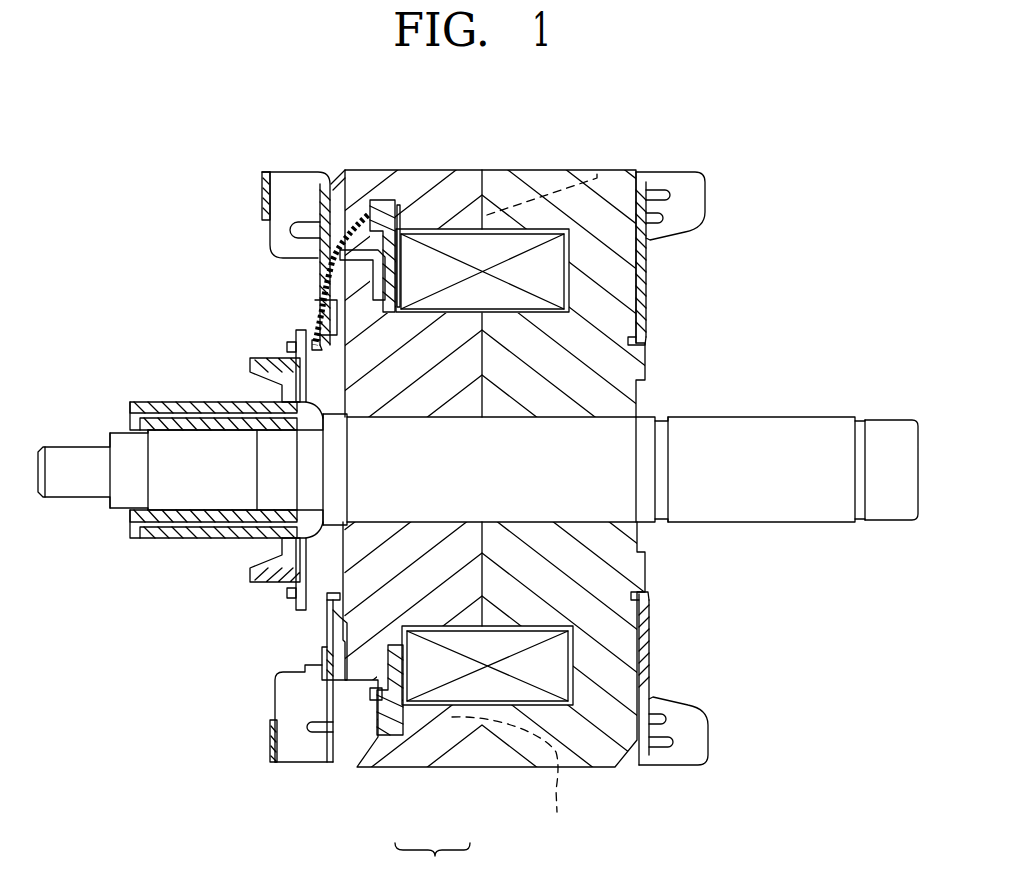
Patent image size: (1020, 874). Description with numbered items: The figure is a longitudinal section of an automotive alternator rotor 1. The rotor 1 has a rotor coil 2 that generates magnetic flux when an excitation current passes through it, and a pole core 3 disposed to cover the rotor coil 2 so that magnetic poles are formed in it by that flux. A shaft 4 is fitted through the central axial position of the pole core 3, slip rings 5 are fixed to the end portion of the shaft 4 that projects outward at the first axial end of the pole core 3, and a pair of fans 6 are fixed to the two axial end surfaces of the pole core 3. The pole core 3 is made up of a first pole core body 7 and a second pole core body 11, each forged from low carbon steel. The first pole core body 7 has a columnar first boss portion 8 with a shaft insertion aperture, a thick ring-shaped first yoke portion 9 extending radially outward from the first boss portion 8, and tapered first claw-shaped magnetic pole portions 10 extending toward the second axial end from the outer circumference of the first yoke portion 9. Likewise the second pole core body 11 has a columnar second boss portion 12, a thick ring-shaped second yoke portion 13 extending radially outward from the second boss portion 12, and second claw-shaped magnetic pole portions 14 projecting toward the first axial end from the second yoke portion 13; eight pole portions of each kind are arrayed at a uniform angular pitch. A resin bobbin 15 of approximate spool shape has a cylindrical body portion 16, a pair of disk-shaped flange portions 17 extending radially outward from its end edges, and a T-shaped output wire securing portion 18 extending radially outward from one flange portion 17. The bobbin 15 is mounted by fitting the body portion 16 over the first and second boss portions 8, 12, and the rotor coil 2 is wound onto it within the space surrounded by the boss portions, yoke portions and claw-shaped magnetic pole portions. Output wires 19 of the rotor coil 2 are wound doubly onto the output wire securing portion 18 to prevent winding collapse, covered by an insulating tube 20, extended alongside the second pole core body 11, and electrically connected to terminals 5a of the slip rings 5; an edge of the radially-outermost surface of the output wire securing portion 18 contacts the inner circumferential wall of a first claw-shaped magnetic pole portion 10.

The rotor 1 is at (188, 125).
The rotor coil 2 is at (483, 247).
The pole core 3 is at (432, 858).
The shaft 4 is at (788, 427).
The slip rings 5 is at (211, 398).
The terminals 5a is at (300, 336).
The fans 6 is at (287, 203).
The first pole core body 7 is at (498, 738).
The first boss portion 8 is at (583, 372).
The first yoke portion 9 is at (608, 278).
The first claw-shaped magnetic pole portions 10 is at (555, 180).
The second pole core body 11 is at (367, 725).
The second boss portion 12 is at (372, 582).
The second yoke portion 13 is at (350, 650).
The second claw-shaped magnetic pole portions 14 is at (511, 784).
The bobbin 15 is at (370, 693).
The body portion 16 is at (345, 312).
The flange portions 17 is at (360, 300).
The output wire securing portion 18 is at (341, 172).
The output wires 19 is at (410, 225).
The insulating tube 20 is at (345, 240).